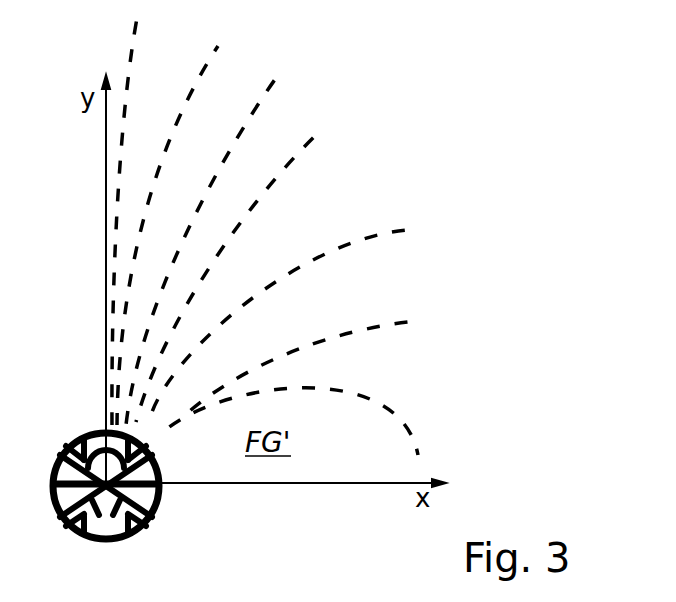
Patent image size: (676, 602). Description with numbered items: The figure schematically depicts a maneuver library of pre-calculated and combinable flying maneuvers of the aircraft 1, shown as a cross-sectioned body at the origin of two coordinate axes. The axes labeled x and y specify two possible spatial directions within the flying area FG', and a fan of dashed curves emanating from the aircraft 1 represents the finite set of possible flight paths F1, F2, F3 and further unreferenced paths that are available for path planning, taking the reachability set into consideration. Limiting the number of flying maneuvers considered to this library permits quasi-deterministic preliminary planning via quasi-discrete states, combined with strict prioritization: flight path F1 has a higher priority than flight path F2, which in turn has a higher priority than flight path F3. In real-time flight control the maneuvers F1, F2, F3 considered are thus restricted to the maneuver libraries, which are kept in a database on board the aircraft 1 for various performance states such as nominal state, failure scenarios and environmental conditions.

The aircraft 1 is at (87, 409).
The flight path F1 is at (372, 400).
The flight path F2 is at (362, 325).
The flight path F3 is at (340, 238).